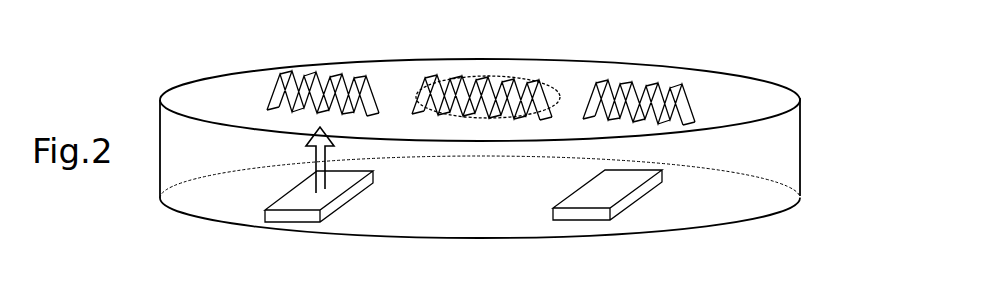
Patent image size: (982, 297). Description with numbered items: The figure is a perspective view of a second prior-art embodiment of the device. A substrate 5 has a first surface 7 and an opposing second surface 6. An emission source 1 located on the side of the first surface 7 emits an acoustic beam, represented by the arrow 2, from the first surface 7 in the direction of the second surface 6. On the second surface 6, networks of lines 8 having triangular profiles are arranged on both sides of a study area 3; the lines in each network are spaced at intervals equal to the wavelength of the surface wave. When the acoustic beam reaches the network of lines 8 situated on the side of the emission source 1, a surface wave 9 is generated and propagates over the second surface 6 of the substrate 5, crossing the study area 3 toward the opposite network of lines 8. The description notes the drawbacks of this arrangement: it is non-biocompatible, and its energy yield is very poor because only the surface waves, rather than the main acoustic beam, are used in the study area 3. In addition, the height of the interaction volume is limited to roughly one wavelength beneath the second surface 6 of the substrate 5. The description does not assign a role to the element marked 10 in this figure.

The emission source 1 is at (302, 200).
The arrow 2 is at (317, 153).
The study area 3 is at (488, 72).
The substrate 5 is at (793, 137).
The second surface 6 is at (200, 93).
The first surface 7 is at (467, 245).
The networks of lines 8 is at (337, 77).
The surface wave 9 is at (550, 62).
The second electronic component 10 is at (582, 197).